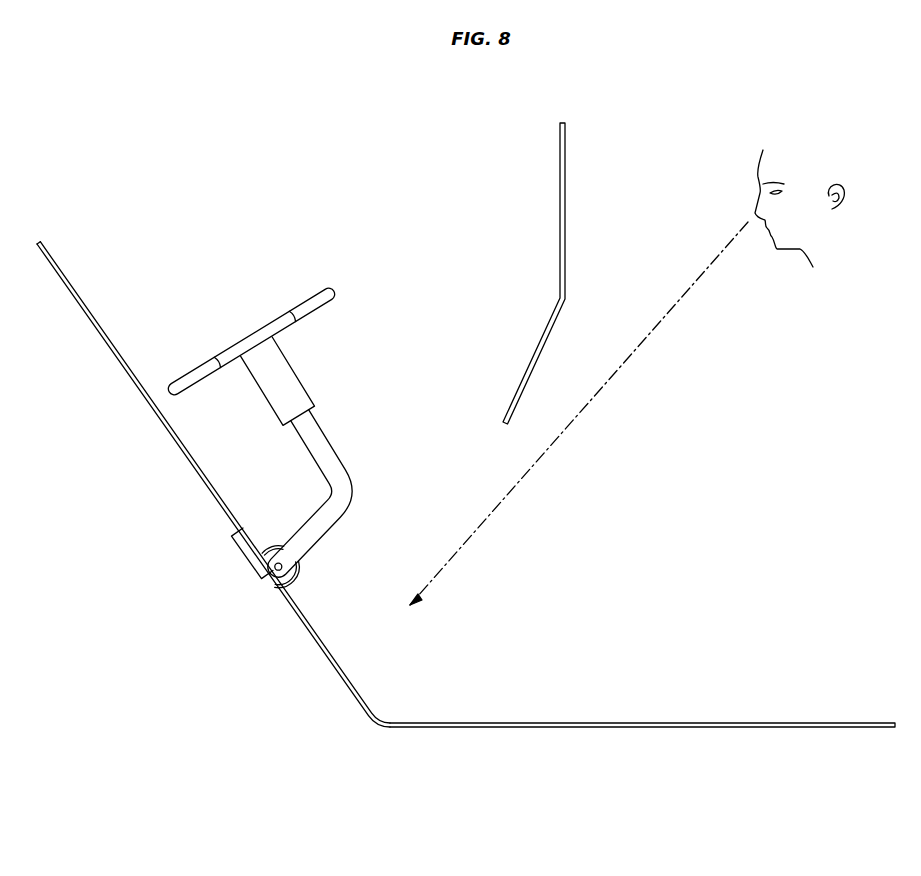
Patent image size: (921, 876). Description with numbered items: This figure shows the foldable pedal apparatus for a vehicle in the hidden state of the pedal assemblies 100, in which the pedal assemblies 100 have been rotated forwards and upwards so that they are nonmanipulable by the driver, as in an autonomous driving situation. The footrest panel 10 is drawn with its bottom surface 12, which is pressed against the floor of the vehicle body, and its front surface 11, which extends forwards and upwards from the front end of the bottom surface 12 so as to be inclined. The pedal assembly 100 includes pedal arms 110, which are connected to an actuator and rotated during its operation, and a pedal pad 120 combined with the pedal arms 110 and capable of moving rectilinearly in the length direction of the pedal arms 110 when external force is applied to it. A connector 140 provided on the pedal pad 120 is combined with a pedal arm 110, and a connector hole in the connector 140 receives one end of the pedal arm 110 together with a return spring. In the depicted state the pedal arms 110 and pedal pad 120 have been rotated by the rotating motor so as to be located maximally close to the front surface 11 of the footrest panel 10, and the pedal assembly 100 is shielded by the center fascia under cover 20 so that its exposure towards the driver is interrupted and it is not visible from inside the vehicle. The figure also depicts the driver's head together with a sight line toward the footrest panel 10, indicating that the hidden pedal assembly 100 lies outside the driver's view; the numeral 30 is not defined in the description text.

The footrest panel 10 is at (464, 531).
The front surface 11 is at (131, 380).
The bottom surface 12 is at (773, 729).
The center fascia under cover 20 is at (565, 168).
The driver 30 is at (833, 241).
The pedal assembly 100 is at (290, 449).
The pedal arm 110 is at (333, 456).
The pedal pad 120 is at (307, 307).
The connector 140 is at (292, 385).